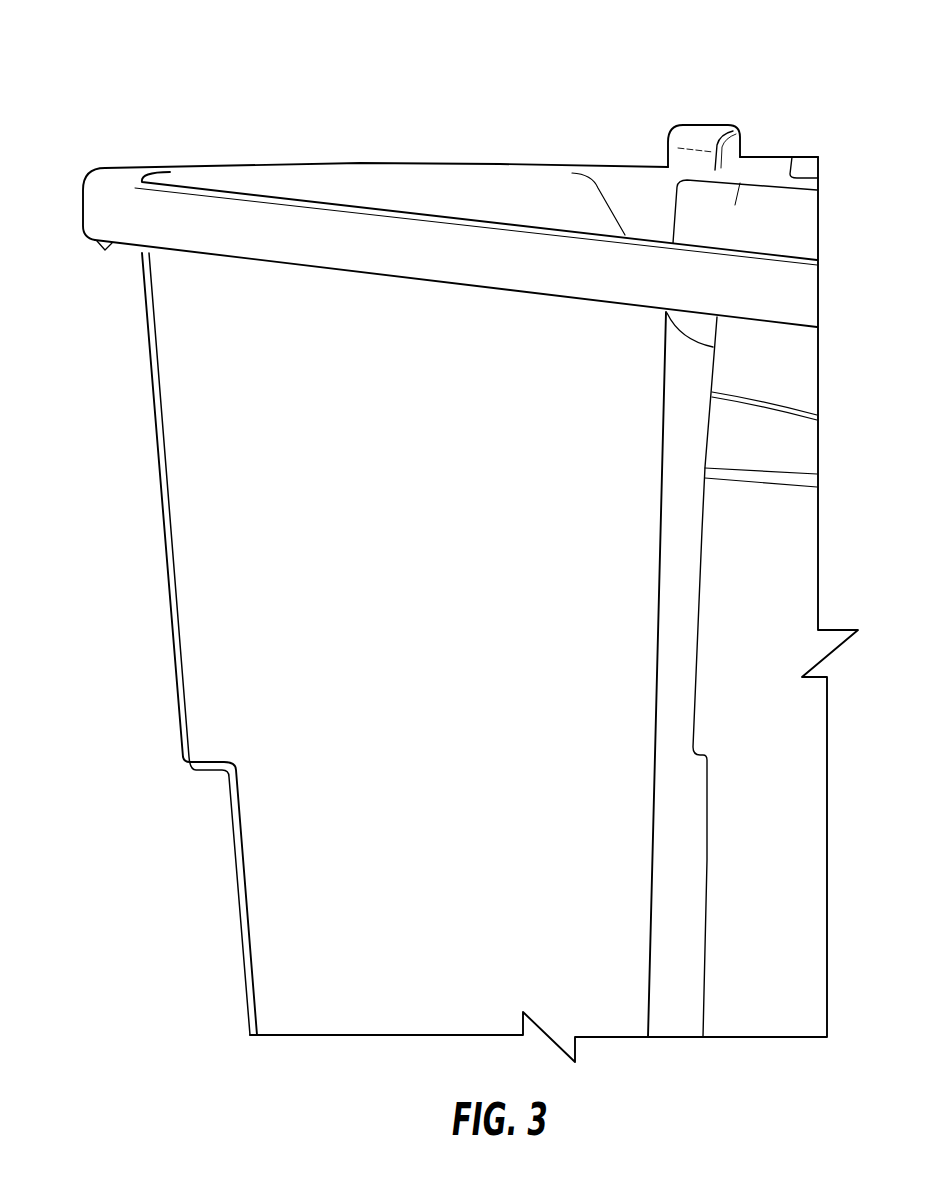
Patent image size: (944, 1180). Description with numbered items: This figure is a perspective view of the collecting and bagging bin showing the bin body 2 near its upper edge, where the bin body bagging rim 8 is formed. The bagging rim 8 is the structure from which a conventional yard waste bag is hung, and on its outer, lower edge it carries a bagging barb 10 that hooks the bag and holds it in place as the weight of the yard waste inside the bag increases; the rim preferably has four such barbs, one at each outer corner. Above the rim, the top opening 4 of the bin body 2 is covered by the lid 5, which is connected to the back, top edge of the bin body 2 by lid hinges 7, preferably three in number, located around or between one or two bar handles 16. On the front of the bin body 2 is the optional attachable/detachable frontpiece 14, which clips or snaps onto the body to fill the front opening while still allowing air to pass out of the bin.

The collecting bin body 2 is at (766, 812).
The top opening 4 is at (556, 166).
The lid 5 is at (702, 125).
The lid hinge 7 is at (757, 154).
The bin body bagging rim 8 is at (200, 213).
The bagging barb 10 is at (102, 243).
The attachable/detachable frontpiece 14 is at (250, 497).
The bar handle 16 is at (804, 151).